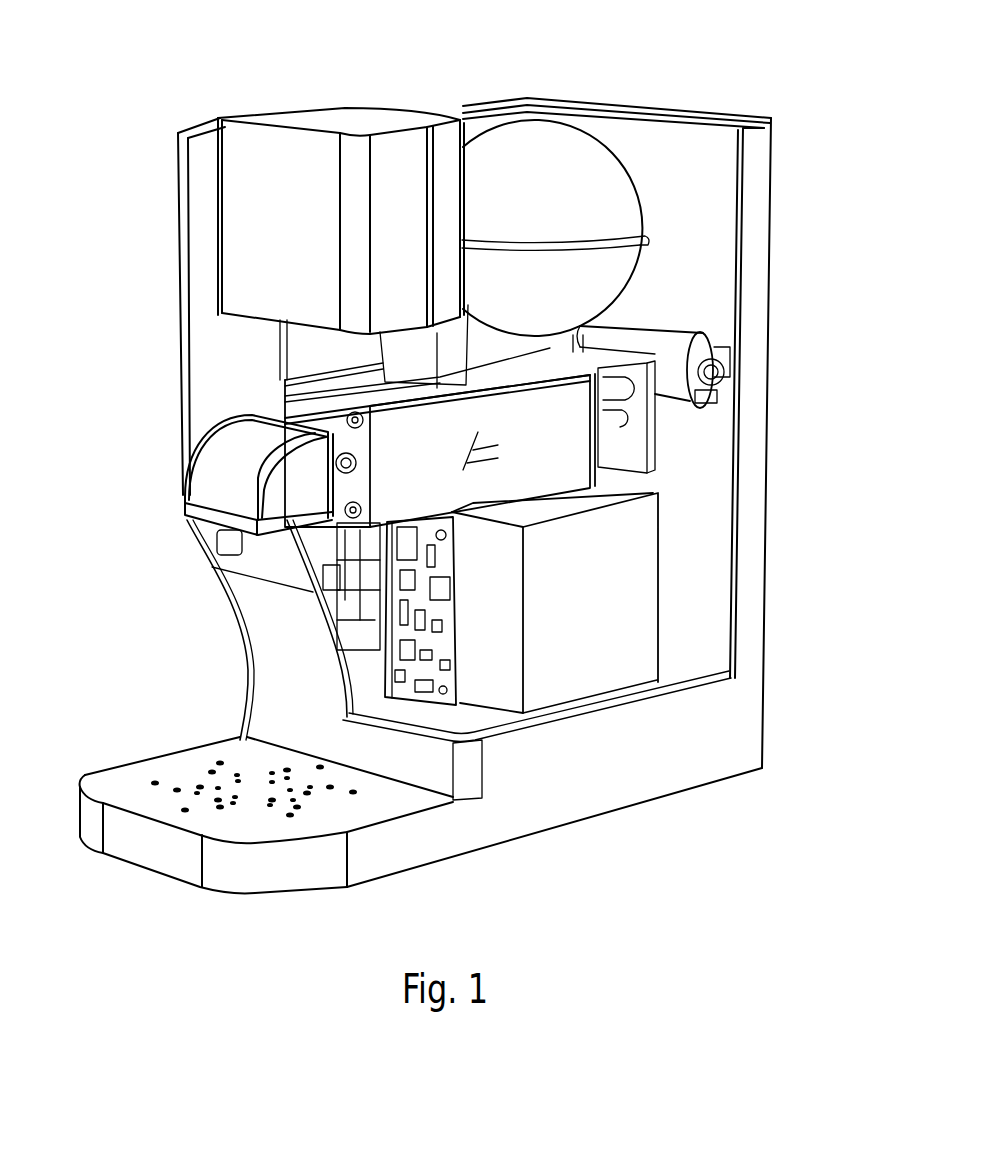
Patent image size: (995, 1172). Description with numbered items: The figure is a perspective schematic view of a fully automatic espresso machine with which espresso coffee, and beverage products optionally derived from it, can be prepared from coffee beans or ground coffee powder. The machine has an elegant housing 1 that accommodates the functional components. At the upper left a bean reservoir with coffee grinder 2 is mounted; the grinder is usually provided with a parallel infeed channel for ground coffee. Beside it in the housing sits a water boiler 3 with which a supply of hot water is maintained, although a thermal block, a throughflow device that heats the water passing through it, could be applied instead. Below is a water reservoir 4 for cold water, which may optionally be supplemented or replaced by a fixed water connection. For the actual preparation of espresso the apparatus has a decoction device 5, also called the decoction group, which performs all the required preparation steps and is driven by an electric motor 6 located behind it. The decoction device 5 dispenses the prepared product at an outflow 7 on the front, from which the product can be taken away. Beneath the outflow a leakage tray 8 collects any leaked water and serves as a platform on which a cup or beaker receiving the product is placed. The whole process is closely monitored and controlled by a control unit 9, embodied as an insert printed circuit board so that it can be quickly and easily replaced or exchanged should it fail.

The housing frame 1 is at (647, 768).
The coffee grinder 2 is at (305, 183).
The water boiler 3 is at (607, 213).
The water reservoir 4 is at (627, 573).
The decoction device 5 is at (568, 458).
The electric motor 6 is at (715, 385).
The outflow 7 is at (227, 540).
The drip tray base 8 is at (180, 777).
The control unit 9 is at (440, 650).